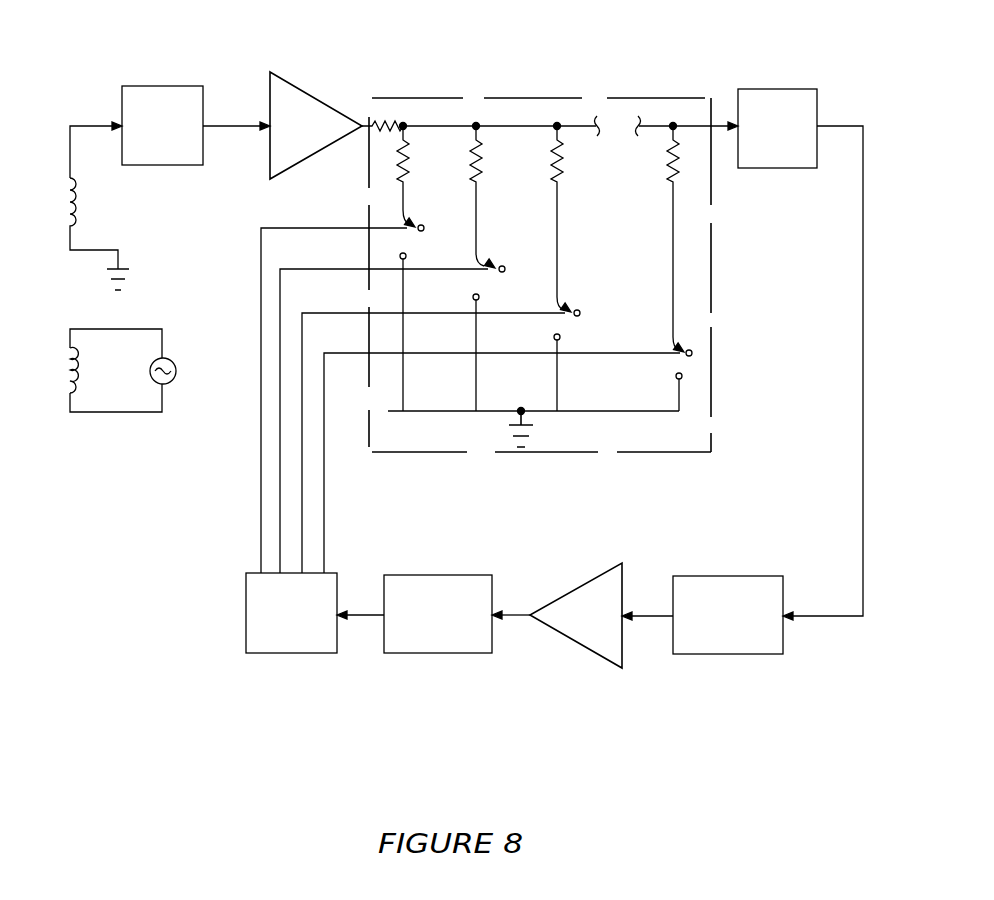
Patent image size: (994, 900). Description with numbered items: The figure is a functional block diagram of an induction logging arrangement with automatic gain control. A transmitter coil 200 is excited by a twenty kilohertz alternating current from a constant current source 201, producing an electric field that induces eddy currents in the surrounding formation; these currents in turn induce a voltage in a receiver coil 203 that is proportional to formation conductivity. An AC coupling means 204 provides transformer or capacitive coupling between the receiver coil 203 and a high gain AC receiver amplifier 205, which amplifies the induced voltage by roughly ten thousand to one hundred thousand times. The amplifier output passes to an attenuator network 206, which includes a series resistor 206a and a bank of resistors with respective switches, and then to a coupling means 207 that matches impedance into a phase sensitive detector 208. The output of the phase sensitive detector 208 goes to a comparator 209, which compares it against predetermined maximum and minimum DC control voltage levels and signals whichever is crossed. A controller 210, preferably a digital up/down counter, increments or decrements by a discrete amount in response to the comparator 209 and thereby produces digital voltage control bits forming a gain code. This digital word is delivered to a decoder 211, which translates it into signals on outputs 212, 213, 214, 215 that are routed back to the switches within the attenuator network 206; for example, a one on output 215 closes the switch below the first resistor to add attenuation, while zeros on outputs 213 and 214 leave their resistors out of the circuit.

The transmitter coil 200 is at (61, 386).
The constant current source 201 is at (173, 363).
The receiver coil 203 is at (80, 207).
The AC coupling means 204 is at (156, 86).
The AC receiver amplifier 205 is at (317, 97).
The attenuator network 206 is at (711, 277).
The series resistor 206a is at (393, 123).
The coupling means 207 is at (768, 89).
The phase sensitive detector 208 is at (743, 574).
The comparator 209 is at (583, 583).
The controller 210 is at (433, 575).
The decoder 211 is at (337, 573).
The decoder output 212 is at (324, 523).
The decoder output 213 is at (302, 484).
The decoder output 214 is at (280, 512).
The decoder output 215 is at (260, 428).